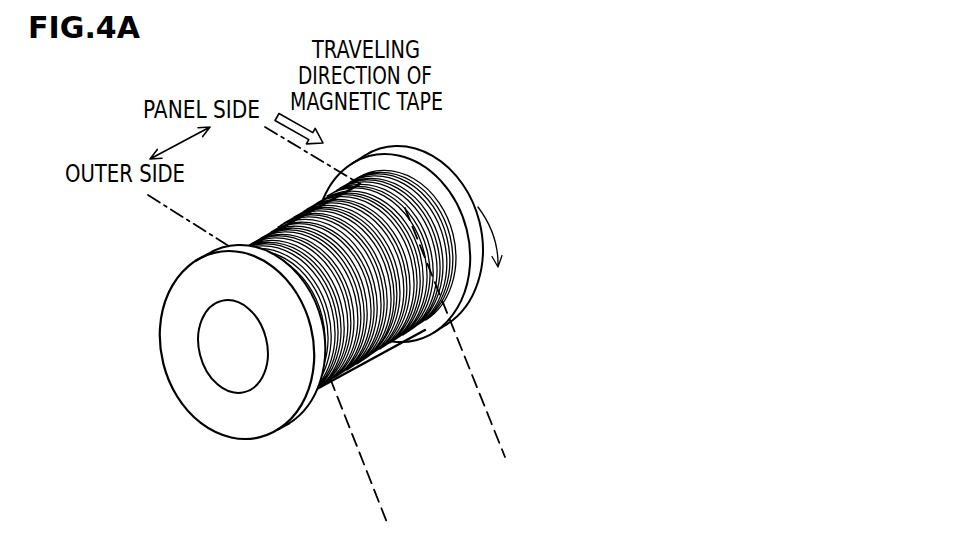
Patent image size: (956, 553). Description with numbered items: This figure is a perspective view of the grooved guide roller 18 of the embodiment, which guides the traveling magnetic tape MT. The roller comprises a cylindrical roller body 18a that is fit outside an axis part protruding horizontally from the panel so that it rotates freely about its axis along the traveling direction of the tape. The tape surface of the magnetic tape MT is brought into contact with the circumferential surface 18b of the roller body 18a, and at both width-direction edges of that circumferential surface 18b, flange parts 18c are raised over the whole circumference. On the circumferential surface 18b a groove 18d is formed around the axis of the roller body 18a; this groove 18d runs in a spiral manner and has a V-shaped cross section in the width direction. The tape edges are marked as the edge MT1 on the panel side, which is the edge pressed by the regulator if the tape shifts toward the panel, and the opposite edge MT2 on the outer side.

The grooved guide roller 18 is at (432, 133).
The roller body 18a is at (491, 307).
The circumferential surface 18b is at (448, 208).
The flange part 18c is at (462, 197).
The groove 18d is at (364, 358).
The magnetic tape MT is at (466, 404).
The edge on the panel side of the magnetic tape MT1 is at (499, 437).
The magnetic tape edge MT2 is at (358, 450).